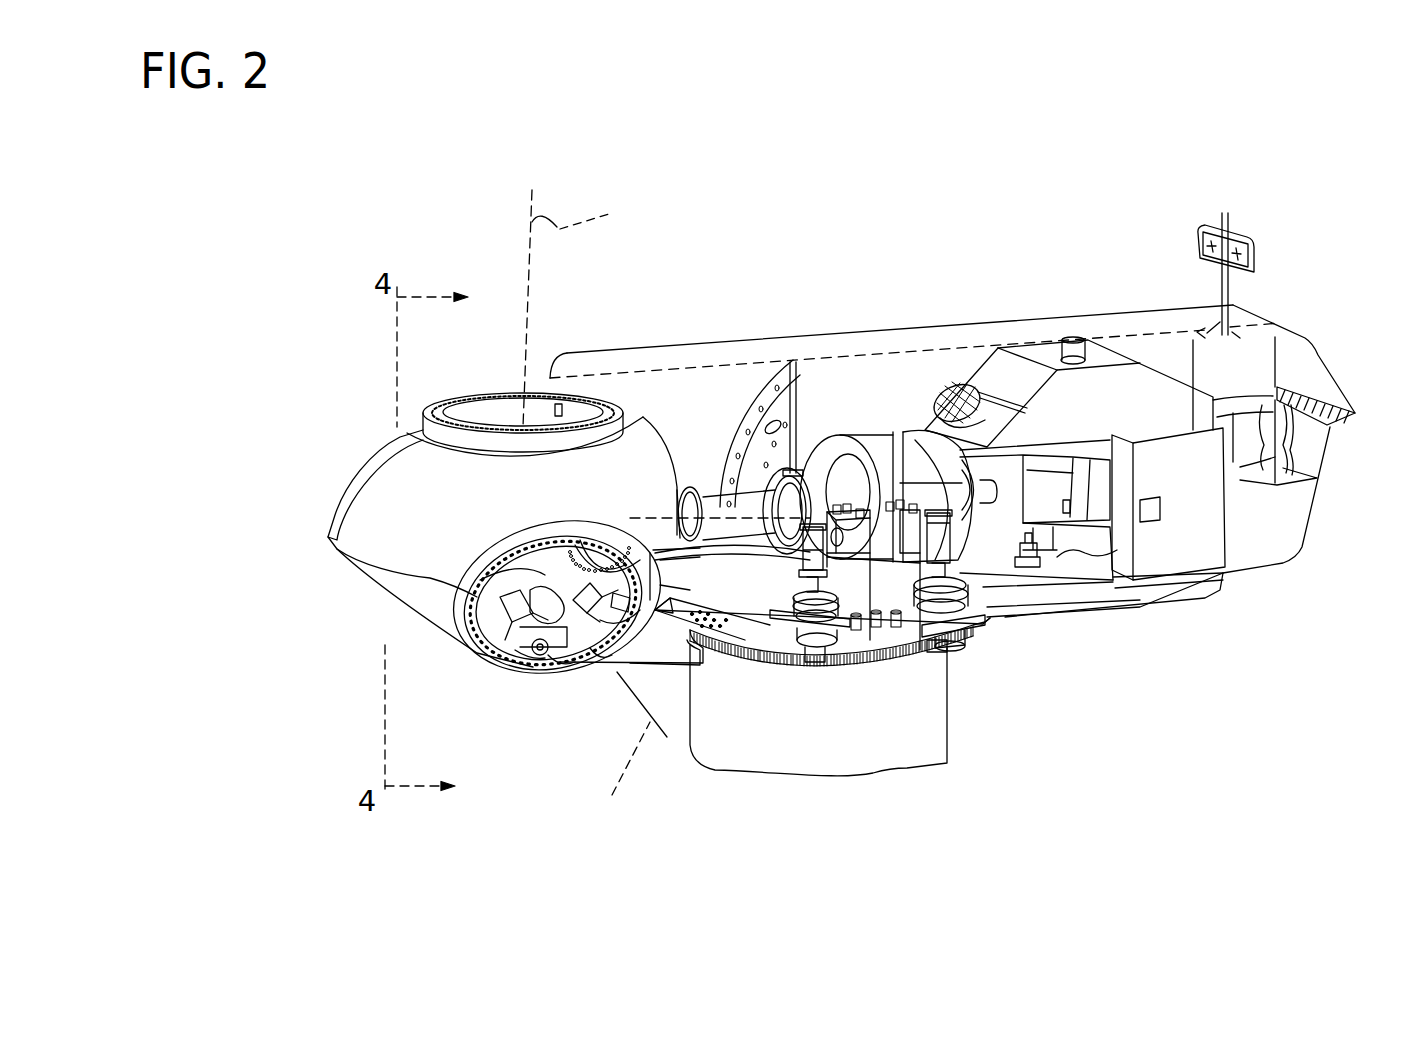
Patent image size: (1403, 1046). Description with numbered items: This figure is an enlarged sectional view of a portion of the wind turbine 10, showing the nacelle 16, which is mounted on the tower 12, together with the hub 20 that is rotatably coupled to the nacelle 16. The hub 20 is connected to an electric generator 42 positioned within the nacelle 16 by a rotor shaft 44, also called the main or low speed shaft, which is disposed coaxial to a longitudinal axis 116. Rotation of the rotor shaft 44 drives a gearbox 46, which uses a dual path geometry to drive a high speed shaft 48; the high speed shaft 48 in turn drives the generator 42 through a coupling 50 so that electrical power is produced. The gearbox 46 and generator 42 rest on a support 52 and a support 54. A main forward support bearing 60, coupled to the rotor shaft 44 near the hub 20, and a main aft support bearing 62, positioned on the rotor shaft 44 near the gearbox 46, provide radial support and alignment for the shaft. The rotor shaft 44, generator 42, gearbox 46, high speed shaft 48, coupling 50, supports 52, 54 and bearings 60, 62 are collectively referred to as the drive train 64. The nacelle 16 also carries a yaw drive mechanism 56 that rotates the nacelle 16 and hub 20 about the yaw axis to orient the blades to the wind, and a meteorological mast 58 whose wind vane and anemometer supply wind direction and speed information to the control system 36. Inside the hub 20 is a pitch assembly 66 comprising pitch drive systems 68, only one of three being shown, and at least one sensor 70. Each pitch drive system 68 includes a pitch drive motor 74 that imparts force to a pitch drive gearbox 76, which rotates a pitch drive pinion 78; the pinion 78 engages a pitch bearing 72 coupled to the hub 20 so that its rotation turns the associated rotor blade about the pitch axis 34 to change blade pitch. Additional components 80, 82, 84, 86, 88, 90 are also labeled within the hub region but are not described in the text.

The wind turbine 10 is at (342, 257).
The tower 12 is at (873, 773).
The nacelle 16 is at (930, 265).
The hub 20 is at (300, 518).
The pitch axis 34 is at (595, 507).
The control system 36 is at (1162, 460).
The electric generator 42 is at (1053, 553).
The rotor shaft 44 is at (710, 500).
The gearbox 46 is at (893, 450).
The high speed shaft 48 is at (967, 540).
The coupling 50 is at (1000, 447).
The support 52 is at (918, 630).
The support 54 is at (990, 550).
The yaw drive mechanism 56 is at (812, 640).
The meteorological mast 58 is at (1255, 244).
The main forward support bearing 60 is at (693, 495).
The main aft support bearing 62 is at (823, 470).
The drive train 64 is at (750, 405).
The pitch assembly 66 is at (505, 514).
The pitch drive system 68 is at (480, 622).
The sensor 70 is at (660, 635).
The pitch bearing 72 is at (497, 660).
The pitch drive motor 74 is at (507, 593).
The pitch drive gearbox 76 is at (553, 570).
The pitch drive pinion 78 is at (527, 663).
The pitch link 80 is at (597, 657).
The pitch actuator 82 is at (600, 565).
The pitch cylinder 84 is at (603, 643).
The pitch shaft 86 is at (558, 660).
The bearing bolt circle 88 is at (600, 540).
The hub wall 90 is at (470, 592).
The longitudinal axis 116 is at (752, 458).